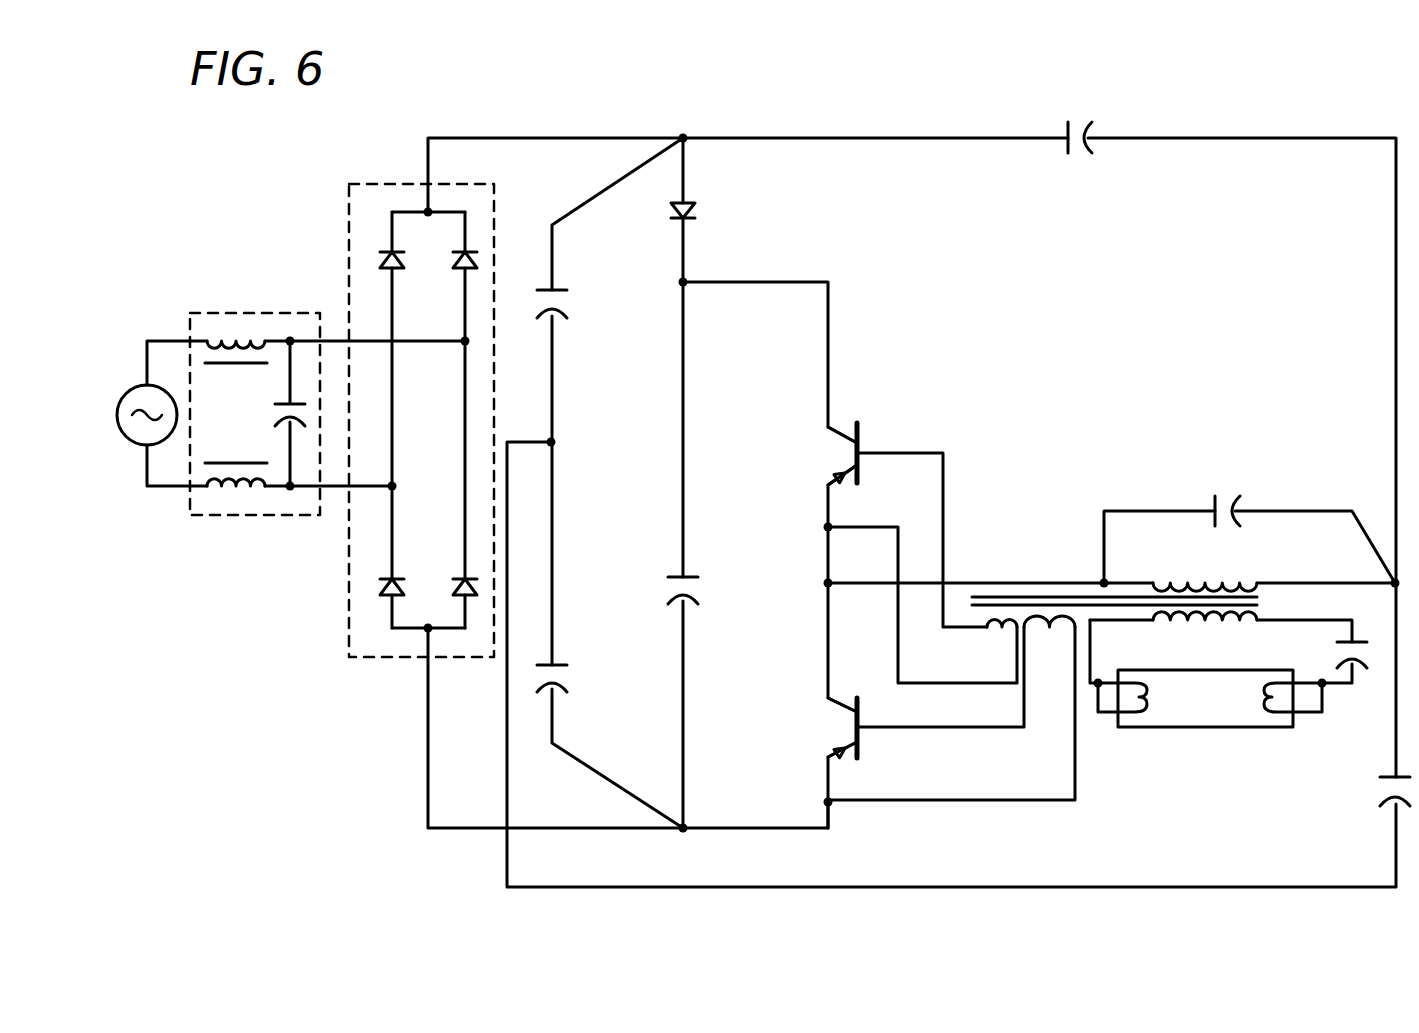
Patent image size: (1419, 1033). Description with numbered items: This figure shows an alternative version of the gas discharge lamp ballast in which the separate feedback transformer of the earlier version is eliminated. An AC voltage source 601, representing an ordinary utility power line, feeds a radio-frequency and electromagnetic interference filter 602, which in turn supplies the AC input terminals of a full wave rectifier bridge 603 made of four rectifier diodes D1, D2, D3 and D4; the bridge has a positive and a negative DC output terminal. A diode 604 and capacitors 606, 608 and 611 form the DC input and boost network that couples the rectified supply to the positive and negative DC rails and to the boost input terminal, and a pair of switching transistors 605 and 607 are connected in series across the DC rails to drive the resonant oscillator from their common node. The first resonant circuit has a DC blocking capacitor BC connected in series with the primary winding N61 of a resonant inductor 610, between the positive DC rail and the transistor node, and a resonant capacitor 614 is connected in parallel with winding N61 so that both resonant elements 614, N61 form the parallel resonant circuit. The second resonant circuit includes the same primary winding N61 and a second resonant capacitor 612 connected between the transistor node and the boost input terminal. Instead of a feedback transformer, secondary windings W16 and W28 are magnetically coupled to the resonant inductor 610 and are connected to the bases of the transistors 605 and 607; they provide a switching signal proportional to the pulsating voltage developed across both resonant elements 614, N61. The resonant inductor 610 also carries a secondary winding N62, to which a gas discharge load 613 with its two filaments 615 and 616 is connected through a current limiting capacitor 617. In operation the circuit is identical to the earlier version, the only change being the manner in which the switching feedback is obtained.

The AC power source 601 is at (126, 394).
The input filter 602 is at (190, 322).
The full-wave rectifier bridge 603 is at (395, 407).
The diode 604 is at (700, 205).
The upper switching transistor 605 is at (850, 480).
The capacitor 606 is at (570, 298).
The lower switching transistor 607 is at (850, 755).
The capacitor 608 is at (698, 580).
The resonant inductor 610 is at (1158, 606).
The capacitor 611 is at (572, 672).
The capacitor 612 is at (1380, 783).
The fluorescent lamp 613 is at (1205, 717).
The resonant element 614 is at (1240, 508).
The lamp filament 615 is at (1140, 708).
The lamp filament 616 is at (1270, 686).
The capacitor 617 is at (1337, 664).
The bridge diode D1 is at (386, 262).
The bridge diode D2 is at (458, 262).
The bridge diode D3 is at (388, 585).
The bridge diode D4 is at (458, 585).
The secondary winding W16 is at (1003, 632).
The drive winding W28 is at (1063, 632).
The primary winding N61 is at (1175, 580).
The secondary winding N62 is at (1183, 625).
The DC blocking capacitor BC is at (1077, 118).